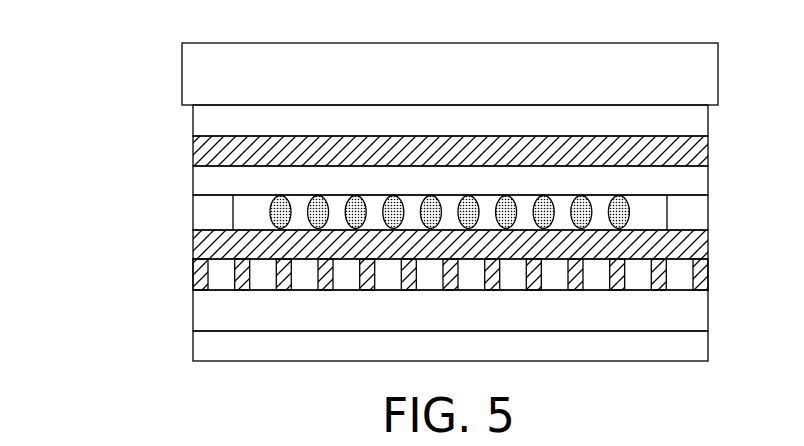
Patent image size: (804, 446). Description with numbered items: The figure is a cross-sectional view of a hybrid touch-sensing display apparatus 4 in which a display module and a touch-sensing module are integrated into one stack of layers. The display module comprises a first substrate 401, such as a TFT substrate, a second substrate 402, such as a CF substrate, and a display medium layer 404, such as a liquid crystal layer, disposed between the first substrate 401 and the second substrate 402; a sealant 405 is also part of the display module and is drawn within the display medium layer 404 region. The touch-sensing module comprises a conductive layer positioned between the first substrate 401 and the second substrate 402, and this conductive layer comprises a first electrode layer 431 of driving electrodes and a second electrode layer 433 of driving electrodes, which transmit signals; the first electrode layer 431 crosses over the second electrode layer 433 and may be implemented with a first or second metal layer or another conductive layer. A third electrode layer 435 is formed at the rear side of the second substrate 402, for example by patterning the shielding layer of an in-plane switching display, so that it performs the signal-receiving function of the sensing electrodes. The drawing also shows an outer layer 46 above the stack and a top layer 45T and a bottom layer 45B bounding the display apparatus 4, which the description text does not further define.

The display apparatus 4 is at (26, 41).
The cover plate 46 is at (693, 77).
The top substrate 45T is at (697, 120).
The third electrode layer 435 is at (200, 152).
The second substrate 402 is at (202, 173).
The display medium layer 404 is at (246, 208).
The sealant 405 is at (215, 212).
The first electrode layer 431 is at (200, 250).
The second electrode layer 433 is at (200, 278).
The first substrate 401 is at (207, 313).
The bottom substrate 45B is at (697, 347).